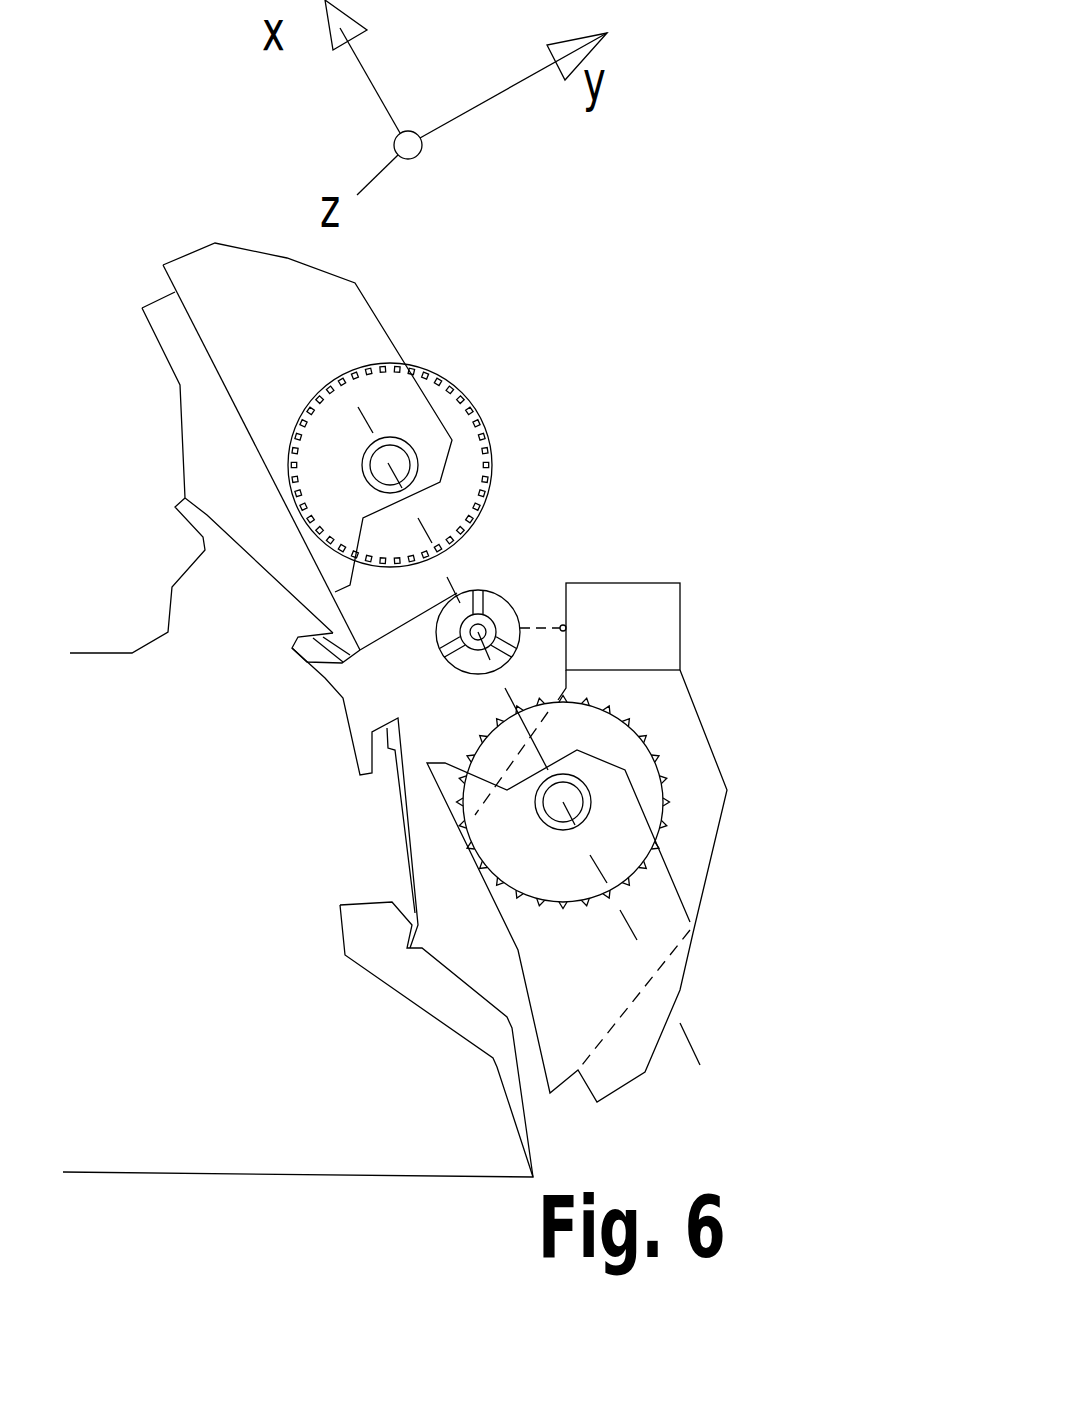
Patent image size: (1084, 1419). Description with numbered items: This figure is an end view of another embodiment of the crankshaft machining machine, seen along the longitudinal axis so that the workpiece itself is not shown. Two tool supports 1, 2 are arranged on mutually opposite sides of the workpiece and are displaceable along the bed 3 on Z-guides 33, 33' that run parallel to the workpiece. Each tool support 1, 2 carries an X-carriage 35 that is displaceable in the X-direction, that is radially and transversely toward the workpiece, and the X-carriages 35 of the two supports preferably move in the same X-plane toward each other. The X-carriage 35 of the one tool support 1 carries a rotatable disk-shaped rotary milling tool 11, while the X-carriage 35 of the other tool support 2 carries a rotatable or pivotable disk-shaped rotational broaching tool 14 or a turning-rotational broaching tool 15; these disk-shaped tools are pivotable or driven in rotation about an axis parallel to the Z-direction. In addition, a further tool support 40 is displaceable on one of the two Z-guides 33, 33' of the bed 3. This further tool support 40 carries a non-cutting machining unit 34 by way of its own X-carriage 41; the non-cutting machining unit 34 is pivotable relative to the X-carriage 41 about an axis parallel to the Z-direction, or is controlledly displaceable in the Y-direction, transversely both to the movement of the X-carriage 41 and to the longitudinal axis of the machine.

The tool support 1 is at (237, 462).
The tool support 2 is at (545, 829).
The bed 3 is at (298, 1039).
The rotary milling tool 11 is at (478, 420).
The rotational broaching tool 14 is at (752, 822).
The turning-rotational broaching tool 15 is at (667, 803).
The Z-guide 33 is at (215, 580).
The Z-guide 33' is at (355, 798).
The non-cutting machining unit 34 is at (600, 626).
The X-carriage 35 is at (342, 375).
The further tool support 40 is at (545, 829).
The X-carriage 41 is at (694, 813).